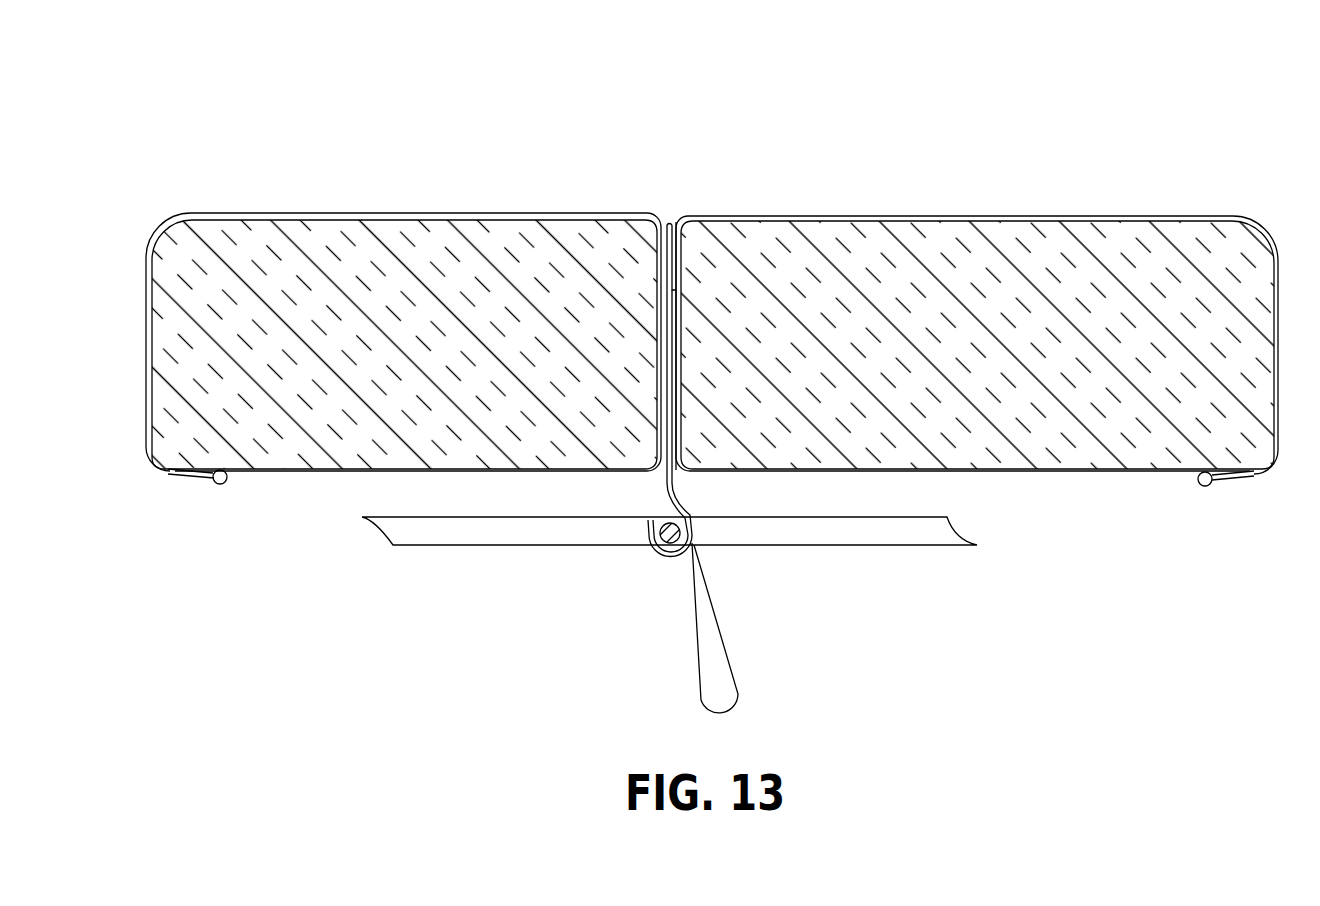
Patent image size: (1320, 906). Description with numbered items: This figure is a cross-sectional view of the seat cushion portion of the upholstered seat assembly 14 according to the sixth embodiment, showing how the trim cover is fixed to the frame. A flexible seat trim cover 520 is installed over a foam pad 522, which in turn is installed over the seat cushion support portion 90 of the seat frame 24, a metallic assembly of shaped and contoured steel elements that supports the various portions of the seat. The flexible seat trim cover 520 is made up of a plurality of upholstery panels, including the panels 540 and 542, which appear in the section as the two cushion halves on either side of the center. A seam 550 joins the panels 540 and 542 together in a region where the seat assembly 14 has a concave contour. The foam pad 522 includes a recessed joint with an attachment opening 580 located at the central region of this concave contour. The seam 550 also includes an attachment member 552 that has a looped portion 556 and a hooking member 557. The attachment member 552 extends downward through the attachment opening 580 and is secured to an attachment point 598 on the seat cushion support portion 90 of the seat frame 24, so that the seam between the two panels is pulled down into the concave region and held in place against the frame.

The seat assembly 14 is at (917, 83).
The upholstery panel 542 is at (330, 212).
The flexible seat trim cover 520 is at (404, 327).
The foam pad 522 is at (315, 422).
The upholstery panel 540 is at (1012, 215).
The seam 550 is at (675, 268).
The attachment opening 580 is at (683, 340).
The seat cushion support portion 90 is at (820, 528).
The seat frame 24 is at (922, 571).
The attachment member 552 is at (700, 608).
The hooking member 557 is at (668, 556).
The attachment point 598 is at (670, 522).
The looped portion 556 is at (740, 702).